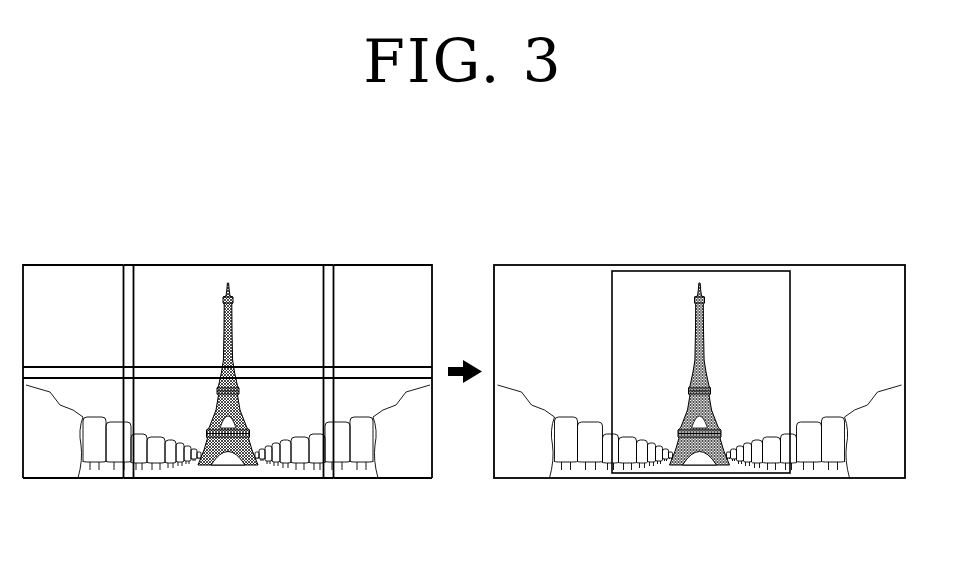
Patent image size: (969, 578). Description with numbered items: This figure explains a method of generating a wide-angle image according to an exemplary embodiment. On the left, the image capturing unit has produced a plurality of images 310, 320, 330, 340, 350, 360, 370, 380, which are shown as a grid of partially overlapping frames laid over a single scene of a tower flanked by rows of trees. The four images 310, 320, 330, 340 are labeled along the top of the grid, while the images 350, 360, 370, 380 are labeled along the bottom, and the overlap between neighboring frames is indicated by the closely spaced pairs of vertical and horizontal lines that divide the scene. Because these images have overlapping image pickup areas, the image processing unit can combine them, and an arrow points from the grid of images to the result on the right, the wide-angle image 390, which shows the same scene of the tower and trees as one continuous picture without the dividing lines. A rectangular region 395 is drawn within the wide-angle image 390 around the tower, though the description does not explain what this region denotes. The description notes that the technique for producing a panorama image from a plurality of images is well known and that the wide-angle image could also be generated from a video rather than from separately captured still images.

The image 310 is at (77, 265).
The image 320 is at (177, 265).
The image 330 is at (288, 265).
The image 340 is at (380, 265).
The image 350 is at (380, 478).
The image 360 is at (290, 478).
The image 370 is at (178, 478).
The image 380 is at (80, 478).
The wide-angle image 390 is at (853, 265).
The cropping guide region 395 is at (792, 281).